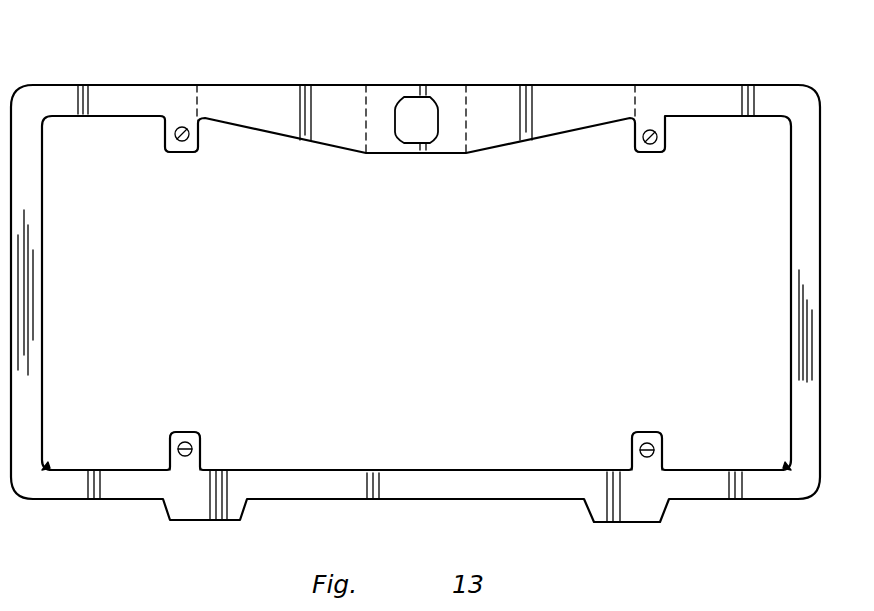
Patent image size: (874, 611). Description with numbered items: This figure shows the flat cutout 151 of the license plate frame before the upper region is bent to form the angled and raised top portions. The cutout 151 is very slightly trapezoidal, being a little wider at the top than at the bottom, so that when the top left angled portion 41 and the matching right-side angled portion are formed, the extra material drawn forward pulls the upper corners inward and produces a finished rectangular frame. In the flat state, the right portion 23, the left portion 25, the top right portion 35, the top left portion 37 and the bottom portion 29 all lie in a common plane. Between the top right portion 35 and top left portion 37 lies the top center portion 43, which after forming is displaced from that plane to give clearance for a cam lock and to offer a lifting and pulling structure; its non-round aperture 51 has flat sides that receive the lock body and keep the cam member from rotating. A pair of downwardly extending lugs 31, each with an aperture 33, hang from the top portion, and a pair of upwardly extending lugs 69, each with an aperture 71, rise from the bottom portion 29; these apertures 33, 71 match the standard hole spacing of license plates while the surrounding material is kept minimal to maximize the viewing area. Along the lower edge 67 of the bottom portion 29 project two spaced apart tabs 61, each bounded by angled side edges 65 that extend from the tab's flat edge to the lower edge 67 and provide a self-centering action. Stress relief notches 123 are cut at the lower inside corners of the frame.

The flat cutout 151 is at (752, 74).
The right portion 23 is at (801, 236).
The left portion 25 is at (34, 258).
The top left portion 37 is at (128, 86).
The top left angled portion 41 is at (261, 86).
The top right portion 35 is at (700, 86).
The top center portion 43 is at (568, 86).
The aperture 51 is at (418, 143).
The downwardly extending lugs 31 is at (198, 152).
The aperture 33 is at (180, 153).
The upwardly extending lugs 69 is at (184, 432).
The aperture 71 is at (178, 449).
The bottom portion 29 is at (441, 484).
The tabs 61 is at (200, 508).
The angled side edges 65 is at (165, 515).
The lower edge 67 is at (55, 500).
The stress relief notches 123 is at (46, 466).